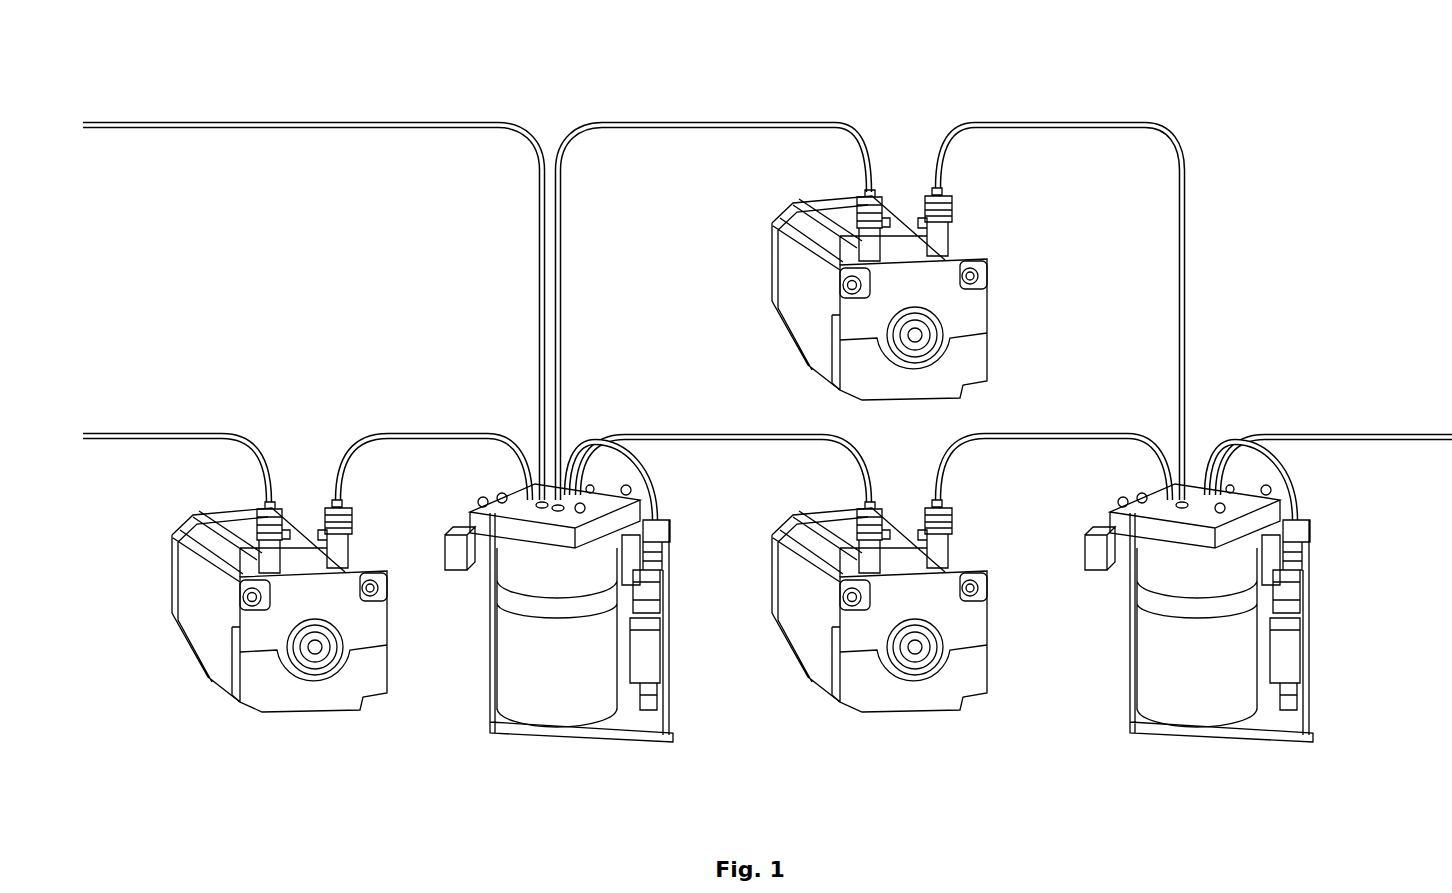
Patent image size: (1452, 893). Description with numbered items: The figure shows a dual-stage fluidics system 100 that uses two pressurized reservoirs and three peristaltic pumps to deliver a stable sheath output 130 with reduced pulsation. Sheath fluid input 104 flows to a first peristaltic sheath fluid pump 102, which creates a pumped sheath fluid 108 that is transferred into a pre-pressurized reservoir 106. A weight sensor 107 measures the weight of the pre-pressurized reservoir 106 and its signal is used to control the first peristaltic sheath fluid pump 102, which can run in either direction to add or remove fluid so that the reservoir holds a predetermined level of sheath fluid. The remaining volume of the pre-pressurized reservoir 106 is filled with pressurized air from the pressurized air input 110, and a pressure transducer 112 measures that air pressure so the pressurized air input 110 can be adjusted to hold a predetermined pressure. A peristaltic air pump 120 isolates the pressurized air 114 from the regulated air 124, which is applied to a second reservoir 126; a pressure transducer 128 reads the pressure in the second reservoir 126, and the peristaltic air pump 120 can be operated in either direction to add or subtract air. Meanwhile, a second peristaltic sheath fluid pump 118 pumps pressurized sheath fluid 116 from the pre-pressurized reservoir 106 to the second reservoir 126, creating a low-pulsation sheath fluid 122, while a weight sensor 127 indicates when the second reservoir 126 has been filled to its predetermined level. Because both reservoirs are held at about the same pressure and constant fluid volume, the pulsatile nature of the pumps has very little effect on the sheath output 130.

The dual-stage fluidics system 100 is at (1222, 90).
The first peristaltic sheath fluid pump 102 is at (258, 636).
The sheath fluid input 104 is at (157, 432).
The pre-pressurized reservoir 106 is at (523, 637).
The weight sensor 107 is at (460, 558).
The pumped sheath fluid 108 is at (397, 432).
The pressurized air input 110 is at (352, 122).
The pressure transducer 112 is at (650, 652).
The pressurized air 114 is at (712, 122).
The pressurized sheath fluid 116 is at (700, 436).
The second peristaltic sheath fluid pump 118 is at (880, 678).
The peristaltic air pump 120 is at (772, 297).
The low-pulsation sheath fluid 122 is at (1068, 433).
The regulated air 124 is at (1070, 122).
The second reservoir 126 is at (1153, 653).
The weight sensor 127 is at (1098, 558).
The pressure transducer 128 is at (1297, 652).
The sheath output 130 is at (1343, 432).